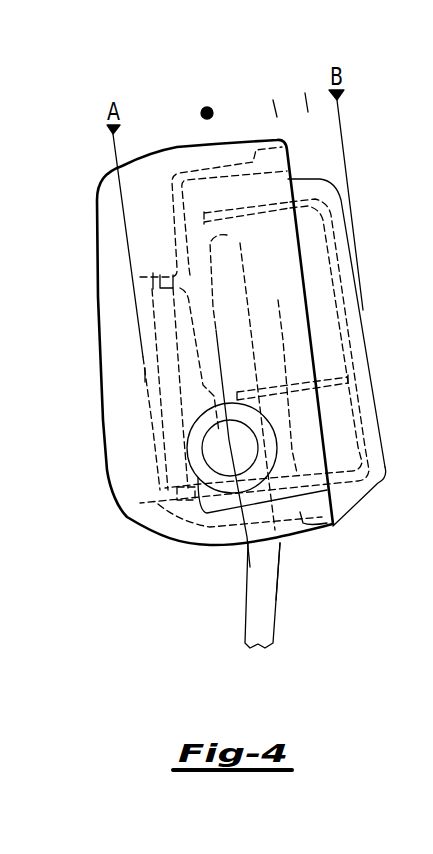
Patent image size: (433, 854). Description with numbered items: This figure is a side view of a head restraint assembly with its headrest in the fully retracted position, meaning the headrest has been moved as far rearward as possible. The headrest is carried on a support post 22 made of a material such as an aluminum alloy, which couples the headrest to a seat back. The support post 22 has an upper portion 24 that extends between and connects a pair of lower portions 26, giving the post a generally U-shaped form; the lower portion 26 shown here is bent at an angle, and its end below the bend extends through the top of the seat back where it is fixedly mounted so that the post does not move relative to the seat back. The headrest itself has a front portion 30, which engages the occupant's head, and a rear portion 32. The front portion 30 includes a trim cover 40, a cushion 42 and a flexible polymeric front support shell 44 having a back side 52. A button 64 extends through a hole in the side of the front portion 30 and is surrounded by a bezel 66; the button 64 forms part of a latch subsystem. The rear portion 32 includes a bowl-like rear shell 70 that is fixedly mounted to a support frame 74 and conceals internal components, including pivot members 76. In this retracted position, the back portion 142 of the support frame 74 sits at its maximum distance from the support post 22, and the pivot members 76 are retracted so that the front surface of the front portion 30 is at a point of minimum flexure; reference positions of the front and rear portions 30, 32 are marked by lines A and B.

The support post 22 is at (243, 604).
The upper portion 24 is at (230, 236).
The lower portion 26 is at (281, 560).
The front portion 30 is at (96, 192).
The rear portion 32 is at (343, 206).
The trim cover 40 is at (177, 148).
The cushion 42 is at (122, 320).
The front support shell 44 is at (137, 292).
The back side 52 is at (145, 375).
The button 64 is at (207, 452).
The bezel 66 is at (187, 437).
The rear shell 70 is at (370, 487).
The support frame 74 is at (356, 353).
The pivot member 76 is at (172, 487).
The back portion 142 is at (333, 253).